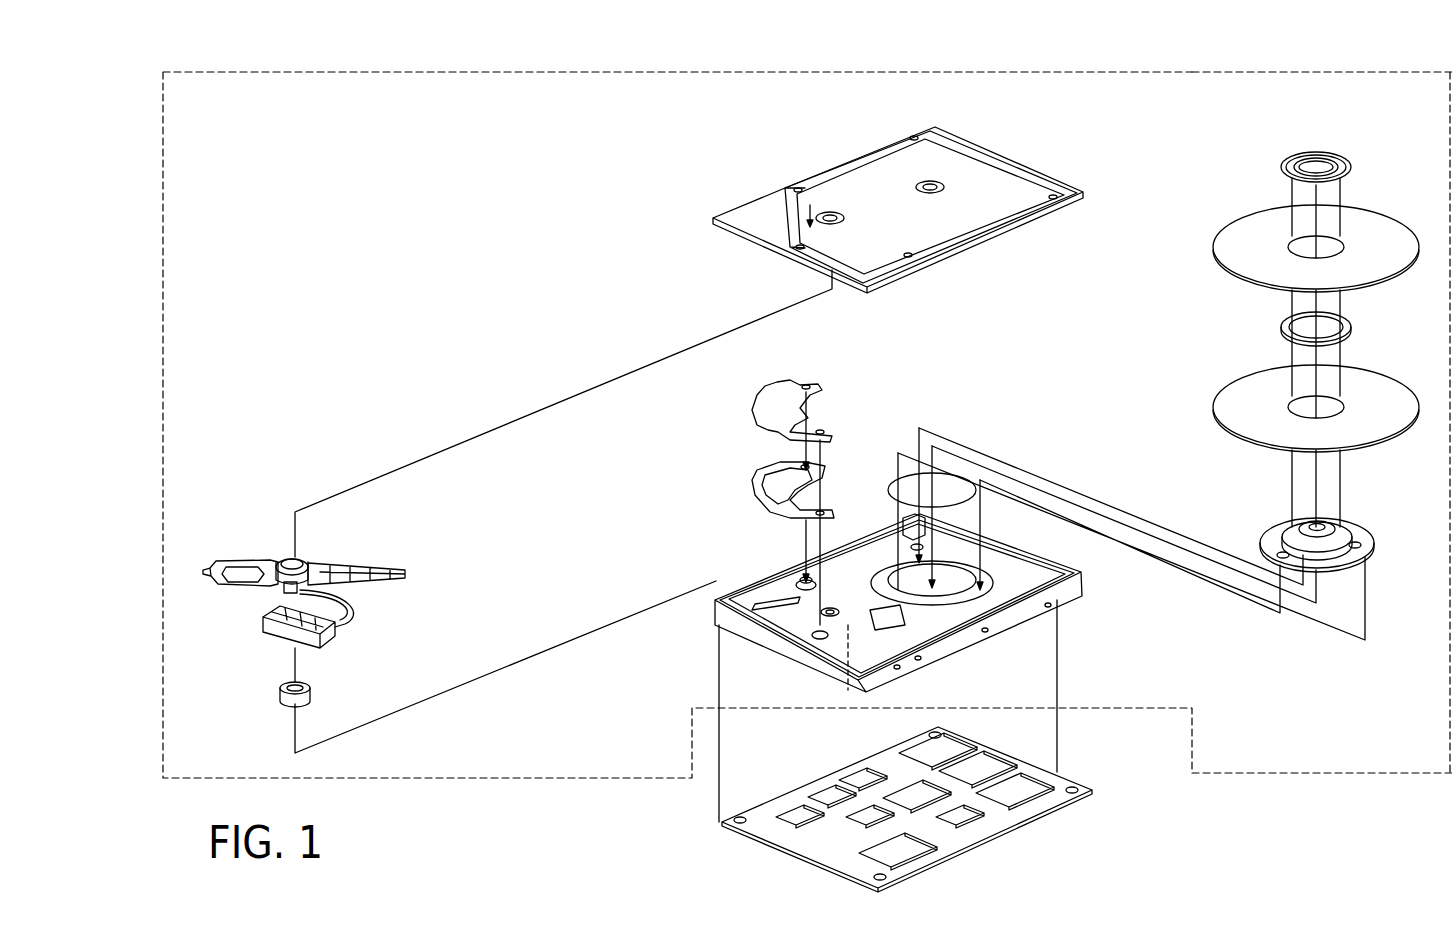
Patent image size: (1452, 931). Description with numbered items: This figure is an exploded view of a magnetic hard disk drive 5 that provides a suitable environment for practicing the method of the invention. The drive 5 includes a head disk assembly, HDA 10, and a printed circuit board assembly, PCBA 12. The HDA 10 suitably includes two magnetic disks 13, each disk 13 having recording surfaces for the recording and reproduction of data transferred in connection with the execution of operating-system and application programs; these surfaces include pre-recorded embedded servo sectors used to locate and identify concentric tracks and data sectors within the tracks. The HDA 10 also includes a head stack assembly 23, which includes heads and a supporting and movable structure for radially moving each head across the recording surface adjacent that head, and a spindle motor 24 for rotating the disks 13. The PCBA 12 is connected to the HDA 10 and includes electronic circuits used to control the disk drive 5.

The drive 5 is at (1278, 38).
The head disk assembly 10 is at (428, 70).
The printed circuit board assembly 12 is at (1037, 806).
The magnetic disks 13 is at (1237, 386).
The head stack assembly 23 is at (255, 558).
The spindle motor 24 is at (1267, 533).